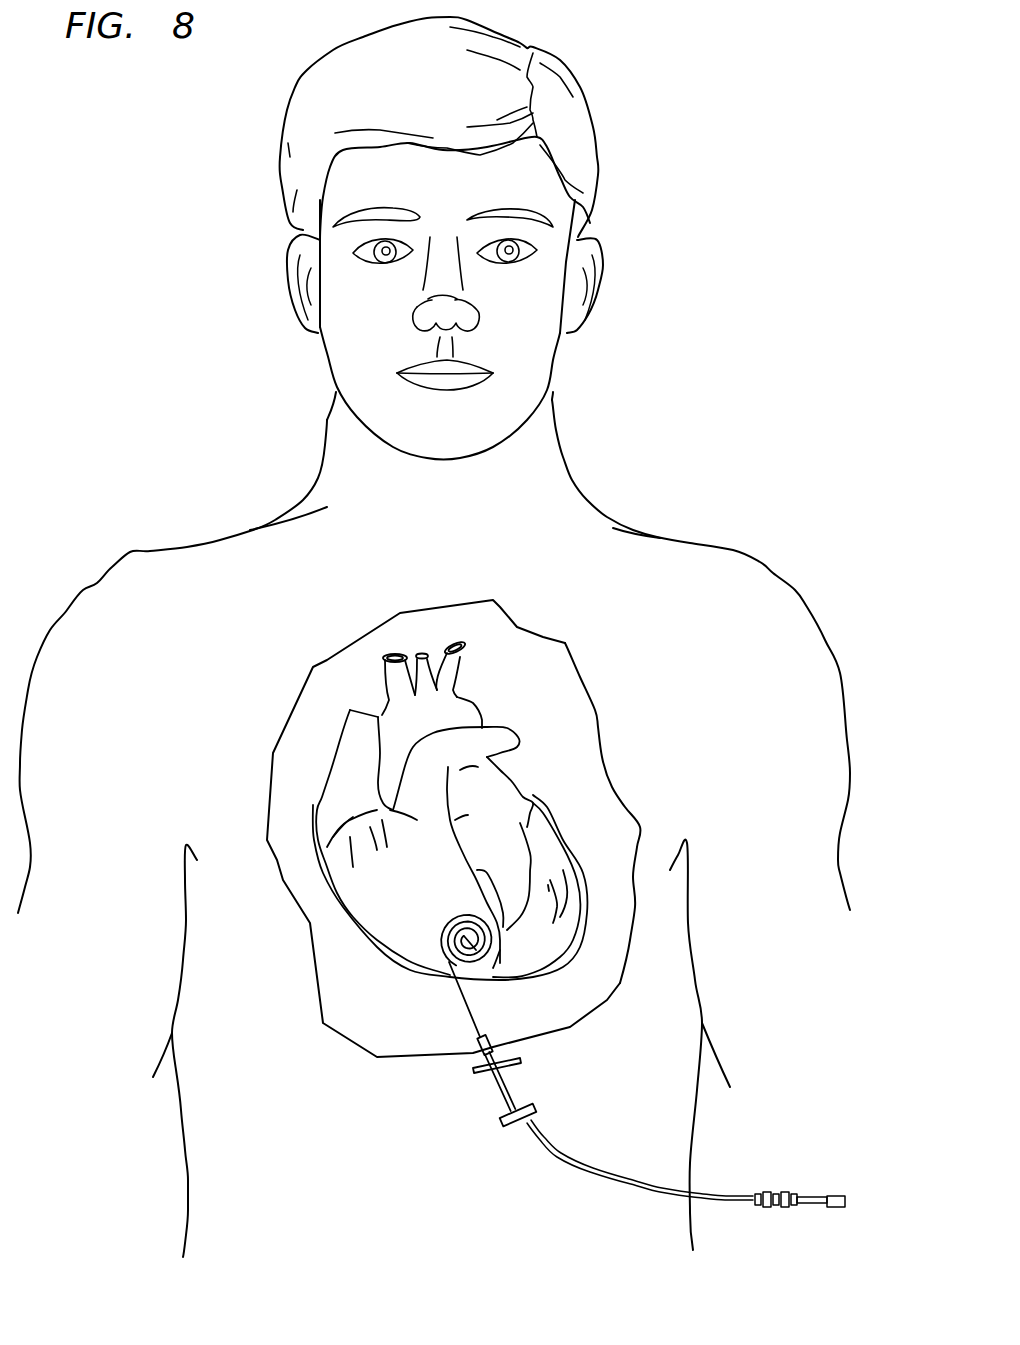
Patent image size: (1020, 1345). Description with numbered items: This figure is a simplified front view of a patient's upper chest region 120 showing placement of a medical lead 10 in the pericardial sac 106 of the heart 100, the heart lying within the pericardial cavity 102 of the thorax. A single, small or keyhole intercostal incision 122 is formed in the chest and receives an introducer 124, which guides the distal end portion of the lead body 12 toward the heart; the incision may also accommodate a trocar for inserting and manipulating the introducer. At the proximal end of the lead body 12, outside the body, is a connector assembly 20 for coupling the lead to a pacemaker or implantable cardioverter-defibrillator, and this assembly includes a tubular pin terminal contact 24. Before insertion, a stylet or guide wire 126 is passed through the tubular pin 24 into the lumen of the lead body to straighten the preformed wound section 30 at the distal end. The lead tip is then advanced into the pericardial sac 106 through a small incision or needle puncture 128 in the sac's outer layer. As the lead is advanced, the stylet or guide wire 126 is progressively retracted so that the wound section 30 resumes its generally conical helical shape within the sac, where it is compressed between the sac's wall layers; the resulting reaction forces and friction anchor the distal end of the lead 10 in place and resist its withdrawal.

The medical lead 10 is at (604, 1094).
The lead body 12 is at (573, 1147).
The connector assembly 20 is at (777, 1192).
The tubular pin terminal contact 24 is at (802, 1204).
The wound section 30 is at (498, 937).
The heart 100 is at (573, 800).
The pericardial cavity 102 is at (562, 763).
The pericardial sac 106 is at (580, 866).
The upper chest region 120 is at (760, 630).
The intercostal incision 122 is at (480, 1070).
The introducer 124 is at (517, 1087).
The stylet or guide wire 126 is at (820, 1196).
The incision or needle puncture 128 is at (458, 985).